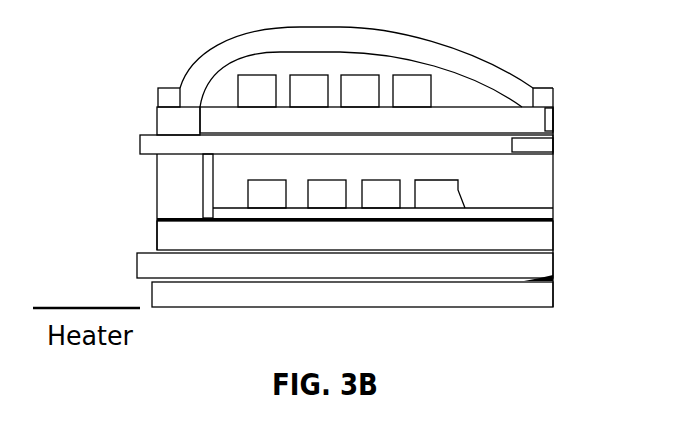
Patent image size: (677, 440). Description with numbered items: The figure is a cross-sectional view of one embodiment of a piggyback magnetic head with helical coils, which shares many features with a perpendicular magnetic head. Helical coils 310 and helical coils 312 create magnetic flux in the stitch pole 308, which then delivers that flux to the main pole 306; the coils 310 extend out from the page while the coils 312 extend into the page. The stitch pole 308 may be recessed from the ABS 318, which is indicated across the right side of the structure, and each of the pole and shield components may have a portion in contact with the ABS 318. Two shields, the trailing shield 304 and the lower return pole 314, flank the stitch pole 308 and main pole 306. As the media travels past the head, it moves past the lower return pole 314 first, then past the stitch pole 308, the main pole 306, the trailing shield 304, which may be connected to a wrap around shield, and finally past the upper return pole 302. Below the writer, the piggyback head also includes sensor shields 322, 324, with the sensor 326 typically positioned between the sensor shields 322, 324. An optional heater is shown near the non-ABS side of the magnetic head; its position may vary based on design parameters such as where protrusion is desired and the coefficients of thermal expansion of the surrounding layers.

The upper return pole 302 is at (488, 57).
The trailing shield 304 is at (553, 118).
The main pole 306 is at (553, 143).
The stitch pole 308 is at (505, 154).
The helical coils 310 is at (237, 90).
The helical coils 312 is at (250, 173).
The lower return pole 314 is at (392, 243).
The ABS 318 is at (566, 221).
The sensor shield 322 is at (137, 267).
The sensor shield 324 is at (152, 292).
The sensor 326 is at (552, 279).